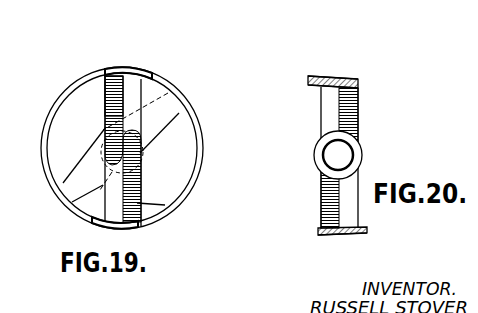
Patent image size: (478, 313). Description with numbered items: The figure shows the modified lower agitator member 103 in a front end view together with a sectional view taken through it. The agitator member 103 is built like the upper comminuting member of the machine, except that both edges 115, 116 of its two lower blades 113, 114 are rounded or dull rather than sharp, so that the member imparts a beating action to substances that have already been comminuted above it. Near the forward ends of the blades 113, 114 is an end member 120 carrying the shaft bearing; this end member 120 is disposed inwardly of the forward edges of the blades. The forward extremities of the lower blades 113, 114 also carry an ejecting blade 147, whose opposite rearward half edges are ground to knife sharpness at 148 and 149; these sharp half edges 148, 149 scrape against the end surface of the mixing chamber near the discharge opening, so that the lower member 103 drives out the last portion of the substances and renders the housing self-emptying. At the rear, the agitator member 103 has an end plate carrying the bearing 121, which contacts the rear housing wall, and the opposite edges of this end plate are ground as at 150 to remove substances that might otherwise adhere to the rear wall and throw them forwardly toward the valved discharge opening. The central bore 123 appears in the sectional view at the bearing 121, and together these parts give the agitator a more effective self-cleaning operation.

In FIG. 19, the lower agitator member 103 is at (153, 68).
In FIG. 20, the lower agitator member 103 is at (352, 74).
In FIG. 19, the lower blade 113 is at (175, 98).
In FIG. 20, the lower blade 113 is at (333, 78).
In FIG. 19, the lower blade 114 is at (44, 162).
In FIG. 20, the lower blade 114 is at (366, 232).
In FIG. 20, the blade edge 115 is at (359, 82).
In FIG. 20, the blade edge 116 is at (320, 230).
In FIG. 19, the end member 120 is at (167, 117).
In FIG. 20, the bearing 121 is at (355, 144).
In FIG. 20, the bore 123 is at (354, 157).
In FIG. 19, the ejecting blade 147 is at (105, 121).
In FIG. 19, the knife-sharp half edge 148 is at (108, 104).
In FIG. 19, the knife-sharp half edge 149 is at (137, 195).
In FIG. 20, the ground edge 150 is at (348, 106).